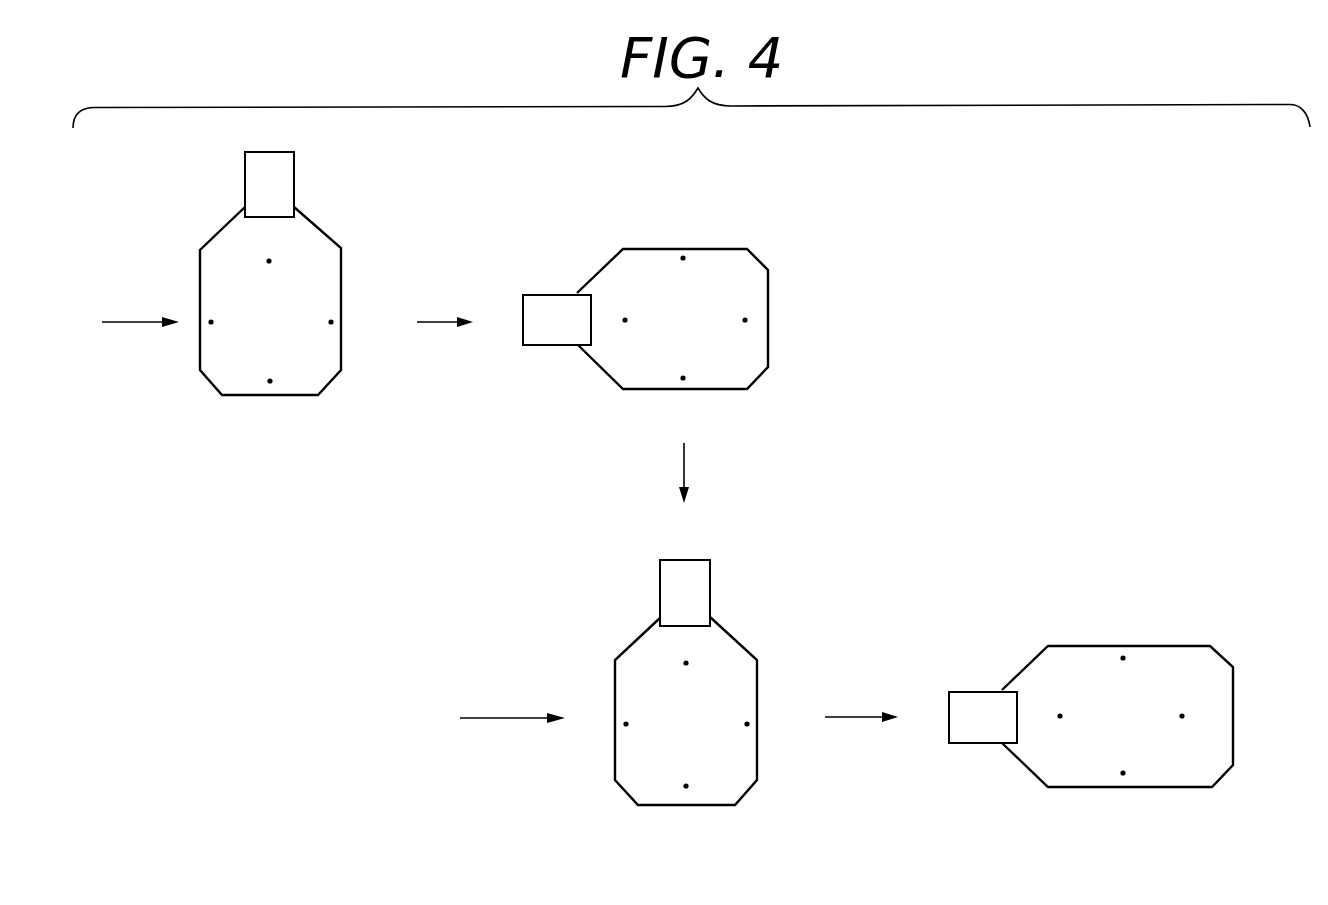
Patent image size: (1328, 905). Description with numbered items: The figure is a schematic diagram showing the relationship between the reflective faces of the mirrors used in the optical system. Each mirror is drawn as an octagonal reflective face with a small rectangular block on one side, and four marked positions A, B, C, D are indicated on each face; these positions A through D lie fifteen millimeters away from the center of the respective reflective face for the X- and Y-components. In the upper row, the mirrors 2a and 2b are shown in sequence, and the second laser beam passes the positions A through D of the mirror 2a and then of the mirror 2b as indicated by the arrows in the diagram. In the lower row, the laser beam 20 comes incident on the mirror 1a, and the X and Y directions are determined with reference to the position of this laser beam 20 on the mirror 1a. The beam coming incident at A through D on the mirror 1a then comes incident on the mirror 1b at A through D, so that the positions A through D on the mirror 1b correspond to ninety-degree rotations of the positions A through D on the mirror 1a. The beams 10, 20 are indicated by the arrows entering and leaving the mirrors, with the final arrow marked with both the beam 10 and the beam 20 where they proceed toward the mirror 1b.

The laser beam 10 is at (129, 322).
The laser beam 20 is at (512, 718).
The mirror 2a is at (335, 380).
The mirror 2b is at (755, 257).
The mirror 1a is at (623, 792).
The mirror 1b is at (1220, 652).
The reflective face position A is at (211, 322).
The reflective face position B is at (269, 261).
The reflective face position C is at (331, 322).
The reflective face position D is at (270, 381).